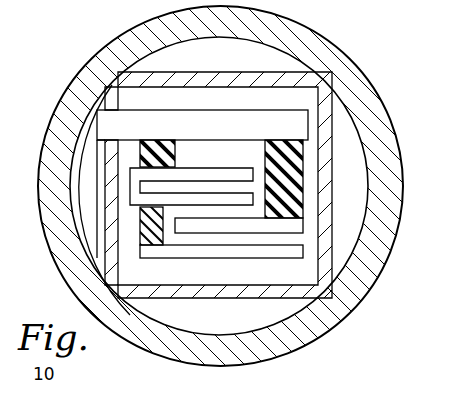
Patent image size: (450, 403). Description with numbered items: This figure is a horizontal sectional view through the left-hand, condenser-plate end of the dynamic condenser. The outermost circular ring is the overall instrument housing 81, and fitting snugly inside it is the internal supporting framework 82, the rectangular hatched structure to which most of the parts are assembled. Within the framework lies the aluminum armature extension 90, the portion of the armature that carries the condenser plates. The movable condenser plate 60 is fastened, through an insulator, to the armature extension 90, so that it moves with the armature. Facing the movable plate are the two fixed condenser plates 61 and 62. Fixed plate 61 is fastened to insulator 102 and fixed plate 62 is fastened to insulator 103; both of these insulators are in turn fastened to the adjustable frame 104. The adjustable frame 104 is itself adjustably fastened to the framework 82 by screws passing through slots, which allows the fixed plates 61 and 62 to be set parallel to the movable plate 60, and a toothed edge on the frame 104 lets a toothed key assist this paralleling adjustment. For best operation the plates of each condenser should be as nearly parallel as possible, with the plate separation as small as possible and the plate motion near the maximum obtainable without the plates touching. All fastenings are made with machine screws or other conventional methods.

The fixed condenser plate 61 is at (62, 90).
The instrument housing 81 is at (330, 60).
The internal supporting framework 82 is at (325, 107).
The insulator 102 is at (147, 142).
The adjustable frame 104 is at (165, 98).
The insulator 103 is at (275, 188).
The movable condenser plate 60 is at (243, 200).
The fixed condenser plate 62 is at (293, 225).
The armature extension 90 is at (290, 254).